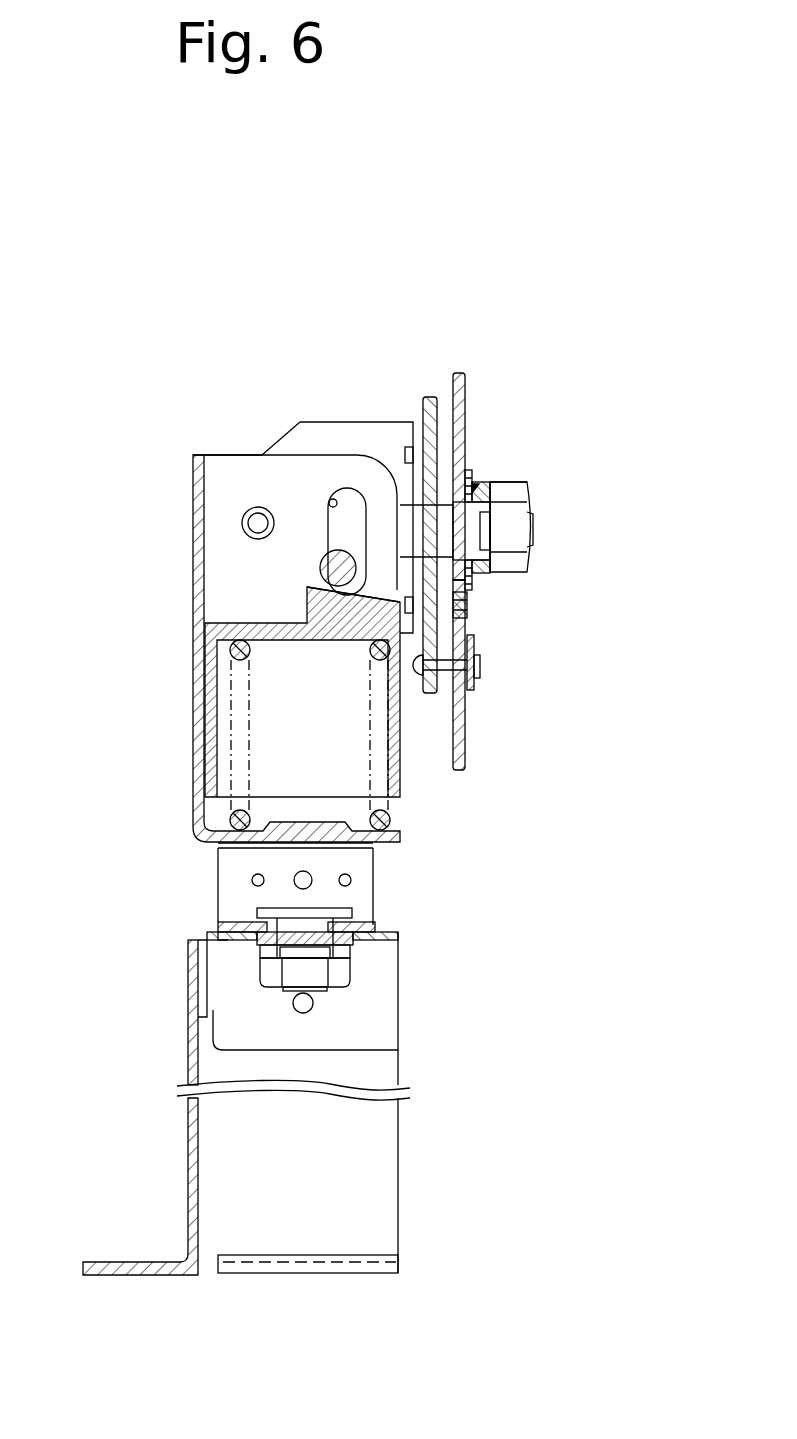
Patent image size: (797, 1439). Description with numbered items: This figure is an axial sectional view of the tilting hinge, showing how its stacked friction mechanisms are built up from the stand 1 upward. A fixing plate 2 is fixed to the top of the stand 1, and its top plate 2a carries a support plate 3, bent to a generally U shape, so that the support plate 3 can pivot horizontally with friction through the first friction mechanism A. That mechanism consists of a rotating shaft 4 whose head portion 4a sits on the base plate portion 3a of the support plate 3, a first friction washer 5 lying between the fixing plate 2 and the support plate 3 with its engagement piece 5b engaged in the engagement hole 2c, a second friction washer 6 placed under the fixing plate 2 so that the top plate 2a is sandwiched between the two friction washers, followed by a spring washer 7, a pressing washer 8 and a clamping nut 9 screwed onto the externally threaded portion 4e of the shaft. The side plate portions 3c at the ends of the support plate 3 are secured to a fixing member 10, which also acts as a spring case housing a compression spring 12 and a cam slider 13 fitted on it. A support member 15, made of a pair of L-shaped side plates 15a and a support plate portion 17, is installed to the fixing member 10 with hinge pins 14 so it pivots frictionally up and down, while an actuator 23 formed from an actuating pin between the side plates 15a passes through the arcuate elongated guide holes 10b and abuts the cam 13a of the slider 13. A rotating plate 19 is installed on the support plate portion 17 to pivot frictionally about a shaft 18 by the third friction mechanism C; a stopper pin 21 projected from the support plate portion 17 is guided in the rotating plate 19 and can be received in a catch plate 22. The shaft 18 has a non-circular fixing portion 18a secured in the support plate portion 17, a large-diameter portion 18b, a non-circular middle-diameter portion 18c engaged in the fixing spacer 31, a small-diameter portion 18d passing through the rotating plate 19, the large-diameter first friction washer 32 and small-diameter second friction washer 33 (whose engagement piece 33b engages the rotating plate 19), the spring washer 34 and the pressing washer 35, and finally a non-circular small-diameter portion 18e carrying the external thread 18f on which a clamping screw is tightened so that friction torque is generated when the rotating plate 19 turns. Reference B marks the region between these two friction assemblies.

The stand 1 is at (405, 1037).
The fixing plate 2 is at (384, 994).
The top plate 2a is at (398, 933).
The engagement hole 2c is at (208, 960).
The support plate 3 is at (215, 880).
The base plate portion 3a is at (372, 921).
The side plate portions 3c is at (210, 842).
The rotating shaft 4 is at (351, 902).
The head portion 4a is at (290, 906).
The externally threaded portion 4e is at (290, 990).
The first friction washer 5 is at (225, 926).
The engagement piece 5b is at (225, 937).
The second friction washer 6 is at (355, 946).
The spring washer 7 is at (352, 946).
The pressing washer 8 is at (355, 963).
The clamping nut 9 is at (346, 990).
The fixing member 10 is at (192, 676).
The arcuate elongated guide hole 10b is at (330, 501).
The compression spring 12 is at (240, 813).
The cam slider 13 is at (316, 628).
The cam 13a is at (320, 586).
The hinge pins 14 is at (250, 531).
The support member 15 is at (326, 419).
The side plates 15a is at (290, 437).
The support plate portion 17 is at (430, 397).
The shaft 18 is at (534, 522).
The non-circular fixing portion 18a is at (417, 523).
The large-diameter portion 18b is at (460, 602).
The non-circular middle-diameter portion 18c is at (476, 574).
The small-diameter portion 18d is at (468, 548).
The non-circular small-diameter portion 18e is at (492, 534).
The external thread 18f is at (538, 527).
The rotating plate 19 is at (462, 762).
The stopper pin 21 is at (477, 664).
The catch plate 22 is at (471, 689).
The actuator 23 is at (340, 561).
The fixing spacer 31 is at (465, 381).
The first friction washer 32 is at (466, 412).
The second friction washer 33 is at (479, 485).
The engagement piece 33b is at (476, 487).
The spring washer 34 is at (537, 488).
The pressing washer 35 is at (531, 494).
The first friction mechanism A is at (250, 986).
The direction B is at (226, 514).
The third friction mechanism C is at (560, 485).